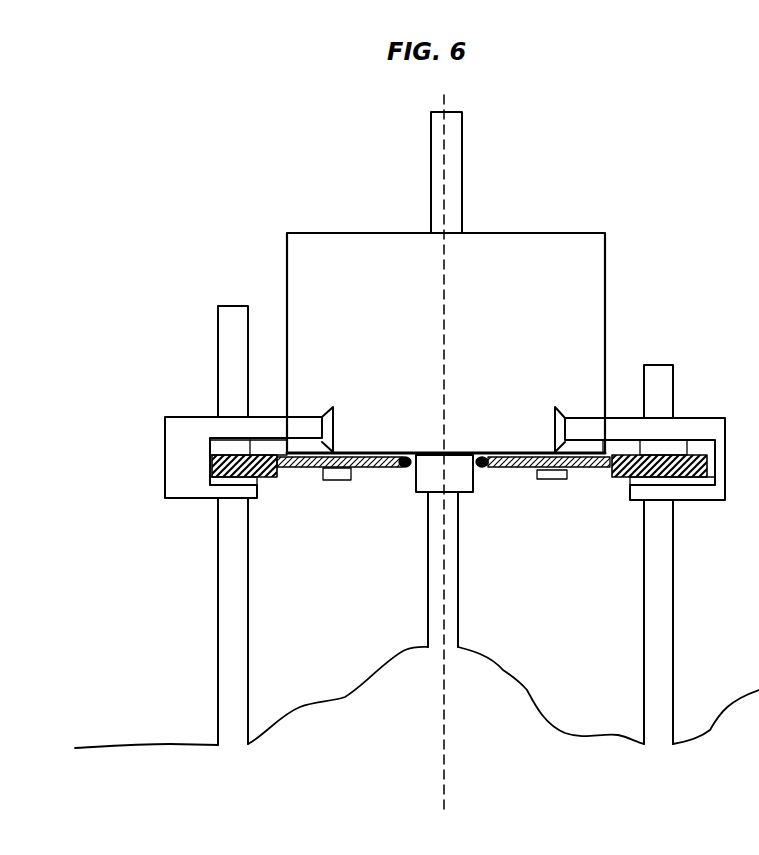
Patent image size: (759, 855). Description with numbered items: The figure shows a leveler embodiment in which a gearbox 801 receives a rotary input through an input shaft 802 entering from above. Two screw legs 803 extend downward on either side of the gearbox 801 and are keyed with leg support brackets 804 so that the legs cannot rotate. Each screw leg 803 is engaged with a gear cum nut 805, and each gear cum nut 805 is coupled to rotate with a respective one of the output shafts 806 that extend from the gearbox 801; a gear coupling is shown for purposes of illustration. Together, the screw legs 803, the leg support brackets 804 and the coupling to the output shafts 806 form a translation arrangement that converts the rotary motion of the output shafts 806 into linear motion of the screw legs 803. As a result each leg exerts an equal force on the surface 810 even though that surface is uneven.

The gearbox 801 is at (607, 288).
The input shaft 802 is at (447, 170).
The screw legs 803 is at (232, 347).
The leg support brackets 804 is at (242, 433).
The gear cum nut 805 is at (266, 477).
The output shafts 806 is at (352, 480).
The surface 810 is at (523, 683).